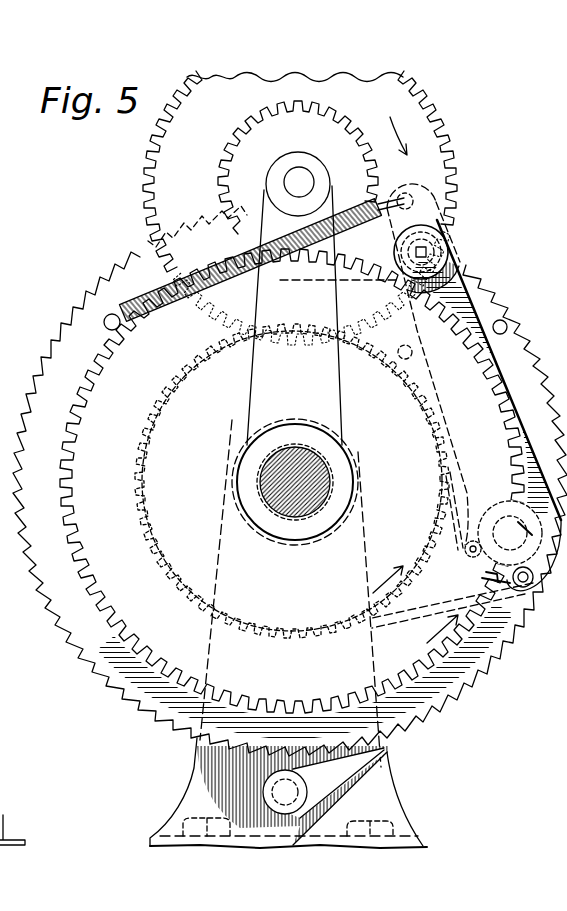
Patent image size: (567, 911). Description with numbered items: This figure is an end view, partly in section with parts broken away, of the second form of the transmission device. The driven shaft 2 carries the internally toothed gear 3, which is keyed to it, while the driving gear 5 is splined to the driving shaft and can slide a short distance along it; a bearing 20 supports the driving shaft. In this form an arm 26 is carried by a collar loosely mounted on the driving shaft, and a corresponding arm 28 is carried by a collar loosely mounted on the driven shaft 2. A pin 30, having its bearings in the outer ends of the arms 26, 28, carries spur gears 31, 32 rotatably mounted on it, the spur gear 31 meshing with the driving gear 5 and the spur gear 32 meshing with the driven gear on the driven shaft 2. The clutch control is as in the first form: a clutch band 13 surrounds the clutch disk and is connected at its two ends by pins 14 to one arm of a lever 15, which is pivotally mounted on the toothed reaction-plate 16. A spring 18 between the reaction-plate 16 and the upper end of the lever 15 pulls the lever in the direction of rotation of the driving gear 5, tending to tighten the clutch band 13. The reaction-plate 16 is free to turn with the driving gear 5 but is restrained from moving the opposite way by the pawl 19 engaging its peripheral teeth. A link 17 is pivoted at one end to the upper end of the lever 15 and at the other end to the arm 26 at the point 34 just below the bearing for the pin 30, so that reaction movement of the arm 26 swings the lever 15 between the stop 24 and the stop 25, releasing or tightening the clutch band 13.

The driven shaft 2 is at (272, 474).
The internally toothed gear 3 is at (100, 593).
The driving gear 5 is at (153, 553).
The clutch band 13 is at (437, 603).
The pins 14 is at (468, 553).
The lever 15 is at (450, 273).
The reaction-plate 16 is at (72, 316).
The link 17 is at (332, 281).
The spring 18 is at (137, 291).
The pawl 19 is at (325, 796).
The bearing 20 is at (196, 767).
The stop 24 is at (501, 320).
The stop 25 is at (400, 358).
The arm 26 is at (290, 570).
The arm 28 is at (252, 395).
The pin 30 is at (296, 182).
The spur gear 31 is at (145, 166).
The spur gear 32 is at (258, 121).
The connection point 34 is at (297, 288).